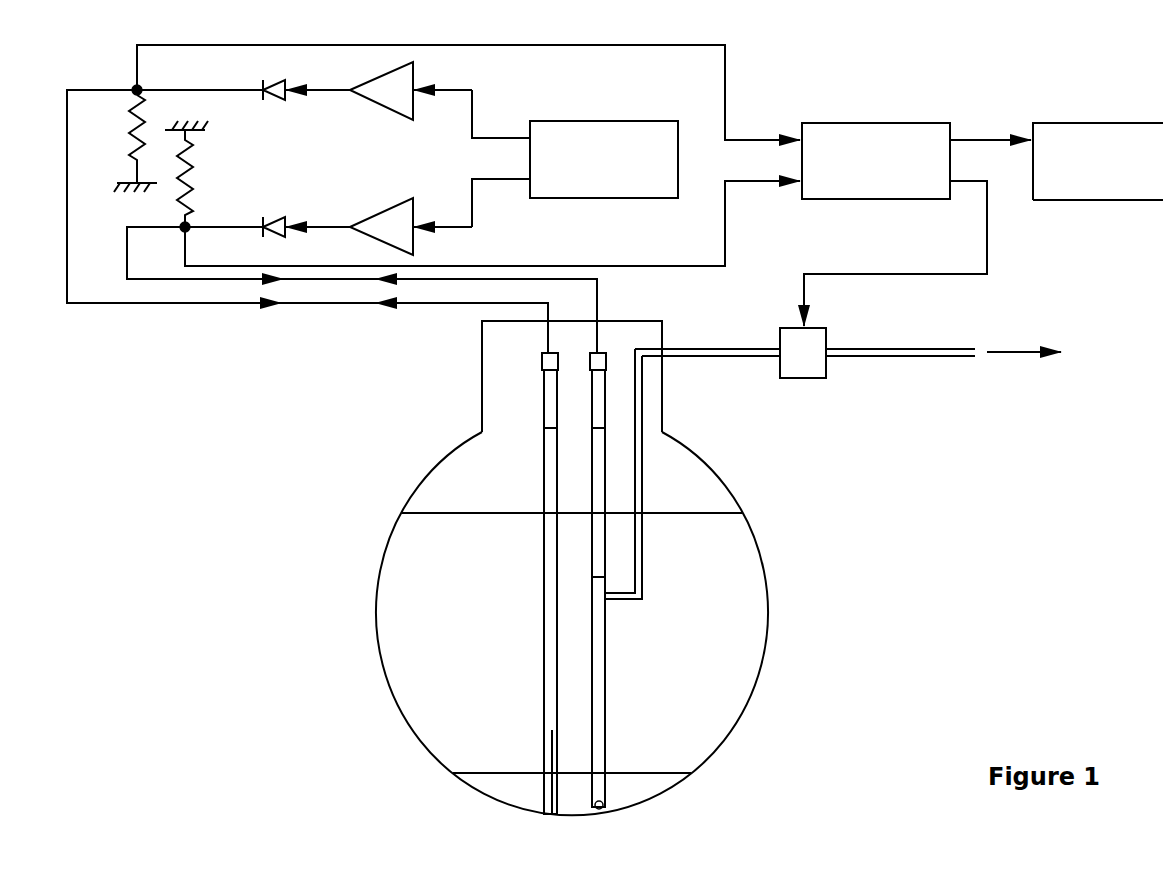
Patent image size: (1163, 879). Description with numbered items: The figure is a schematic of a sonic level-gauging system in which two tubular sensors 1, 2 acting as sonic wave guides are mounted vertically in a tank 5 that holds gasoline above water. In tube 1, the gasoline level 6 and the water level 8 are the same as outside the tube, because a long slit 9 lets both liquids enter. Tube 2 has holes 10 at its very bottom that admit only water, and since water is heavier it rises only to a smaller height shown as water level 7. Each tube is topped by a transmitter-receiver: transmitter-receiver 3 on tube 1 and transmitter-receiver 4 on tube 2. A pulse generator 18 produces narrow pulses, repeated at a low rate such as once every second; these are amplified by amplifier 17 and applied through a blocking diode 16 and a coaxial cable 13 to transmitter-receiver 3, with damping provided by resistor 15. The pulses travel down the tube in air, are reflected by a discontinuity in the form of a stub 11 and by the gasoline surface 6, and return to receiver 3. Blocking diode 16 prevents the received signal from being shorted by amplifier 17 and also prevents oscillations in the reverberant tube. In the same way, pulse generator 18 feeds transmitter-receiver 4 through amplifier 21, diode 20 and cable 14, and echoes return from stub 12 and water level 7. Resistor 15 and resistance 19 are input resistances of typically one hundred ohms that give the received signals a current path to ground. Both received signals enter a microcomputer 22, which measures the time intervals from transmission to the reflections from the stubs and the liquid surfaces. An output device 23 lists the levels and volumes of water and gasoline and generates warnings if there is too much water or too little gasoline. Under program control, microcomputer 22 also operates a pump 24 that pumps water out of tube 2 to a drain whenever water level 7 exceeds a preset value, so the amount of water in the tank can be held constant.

The tubular sensor 1 is at (541, 642).
The tubular sensor 2 is at (608, 642).
The transmitter-receiver 3 is at (538, 363).
The transmitter-receiver 4 is at (611, 363).
The tank 5 is at (773, 604).
The gasoline level 6 is at (506, 511).
The water level 7 is at (595, 575).
The water level 8 is at (646, 769).
The long slit 9 is at (543, 748).
The holes 10 is at (604, 809).
The stub 11 is at (533, 430).
The stub 12 is at (619, 430).
The coaxial cable 13 is at (307, 221).
The cable 14 is at (362, 290).
The resistor 15 is at (126, 143).
The blocking diode 16 is at (306, 74).
The amplifier 17 is at (440, 100).
The pulse generator 18 is at (604, 159).
The resistance 19 is at (203, 174).
The diode 20 is at (306, 209).
The amplifier 21 is at (440, 217).
The microcomputer 22 is at (916, 224).
The output device 23 is at (1098, 161).
The pump 24 is at (833, 463).